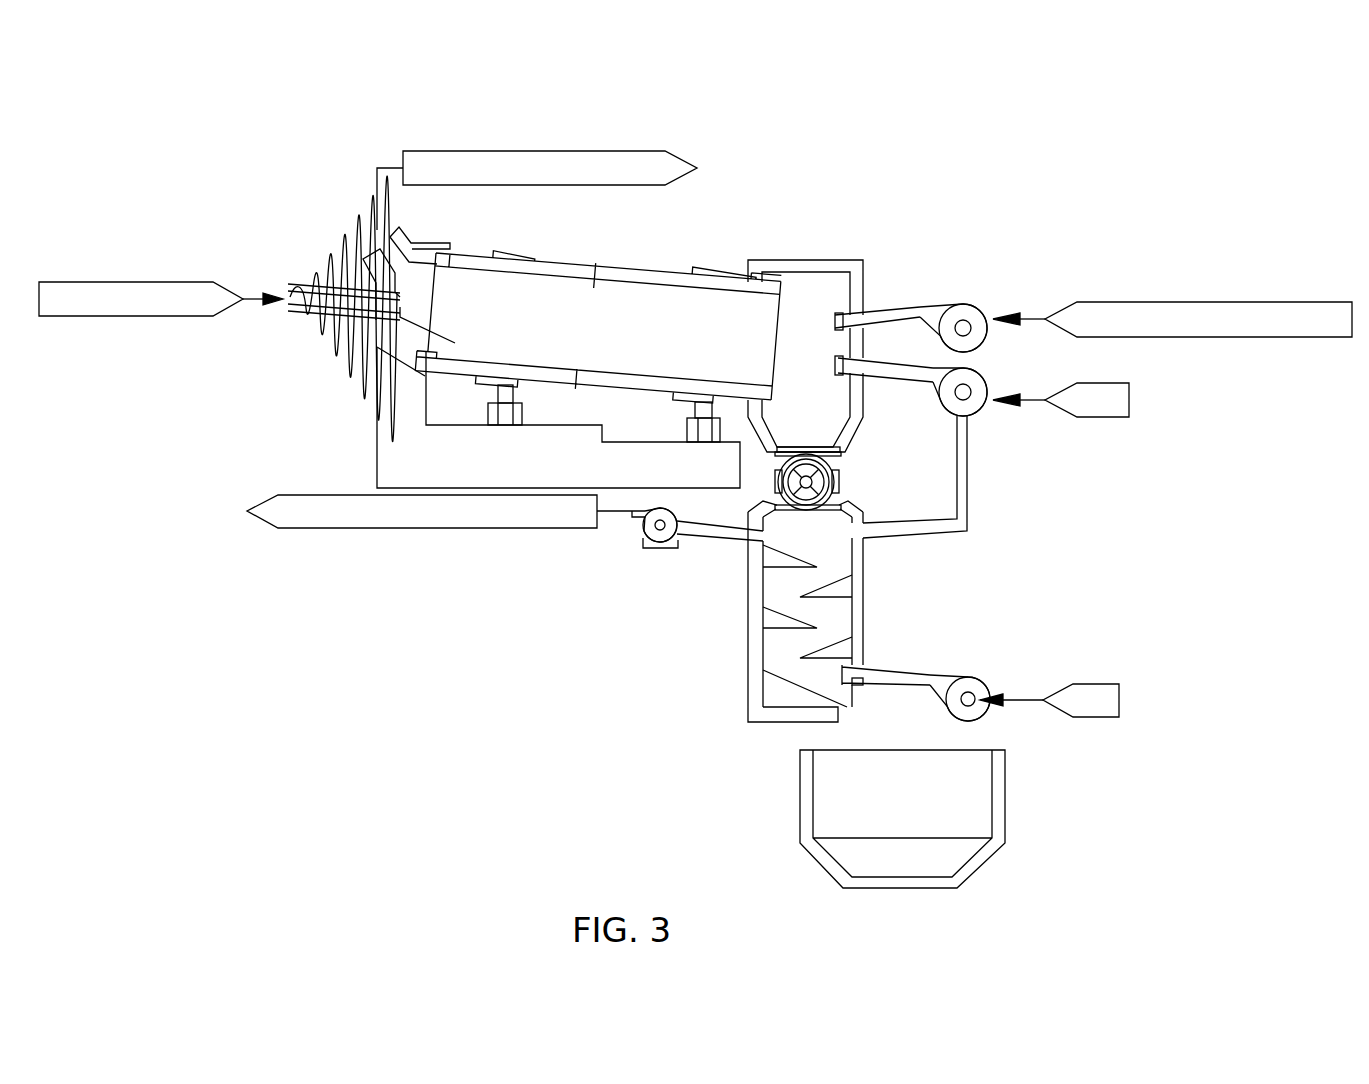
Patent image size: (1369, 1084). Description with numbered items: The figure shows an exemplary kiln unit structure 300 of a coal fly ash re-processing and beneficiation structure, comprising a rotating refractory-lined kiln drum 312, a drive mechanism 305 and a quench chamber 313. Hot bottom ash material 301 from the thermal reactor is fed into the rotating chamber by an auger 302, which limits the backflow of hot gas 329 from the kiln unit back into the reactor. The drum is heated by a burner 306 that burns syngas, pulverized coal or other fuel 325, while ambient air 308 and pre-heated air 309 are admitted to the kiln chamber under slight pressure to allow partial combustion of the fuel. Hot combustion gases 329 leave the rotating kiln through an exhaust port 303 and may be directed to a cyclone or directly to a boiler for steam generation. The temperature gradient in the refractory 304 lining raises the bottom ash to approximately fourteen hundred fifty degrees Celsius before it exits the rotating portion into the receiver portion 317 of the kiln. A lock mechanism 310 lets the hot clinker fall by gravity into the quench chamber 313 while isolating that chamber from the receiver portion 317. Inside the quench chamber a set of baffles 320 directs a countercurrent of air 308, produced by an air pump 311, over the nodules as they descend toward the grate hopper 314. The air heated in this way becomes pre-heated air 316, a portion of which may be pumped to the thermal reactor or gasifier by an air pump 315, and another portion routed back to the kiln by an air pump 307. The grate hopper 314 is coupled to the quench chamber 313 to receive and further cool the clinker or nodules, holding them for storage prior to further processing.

The kiln unit structure 300 is at (678, 87).
The hot bottom ash material 301 is at (172, 282).
The auger 302 is at (327, 314).
The exhaust port 303 is at (379, 248).
The refractory 304 is at (655, 377).
The drive mechanism 305 is at (690, 425).
The burner 306 is at (947, 303).
The air pump 307 is at (973, 415).
The ambient air 308 is at (1087, 683).
The pre-heated air 309 is at (1090, 382).
The lock mechanism 310 is at (838, 480).
The air pump 311 is at (963, 673).
The rotating refractory-lined kiln drum 312 is at (612, 265).
The quench chamber 313 is at (750, 601).
The grate hopper 314 is at (800, 783).
The air pump 315 is at (649, 547).
The pre-heated air 316 is at (415, 528).
The receiver portion 317 is at (800, 258).
The baffles 320 is at (843, 587).
The fuel 325 is at (1087, 301).
The hot combustion gases 329 is at (430, 151).